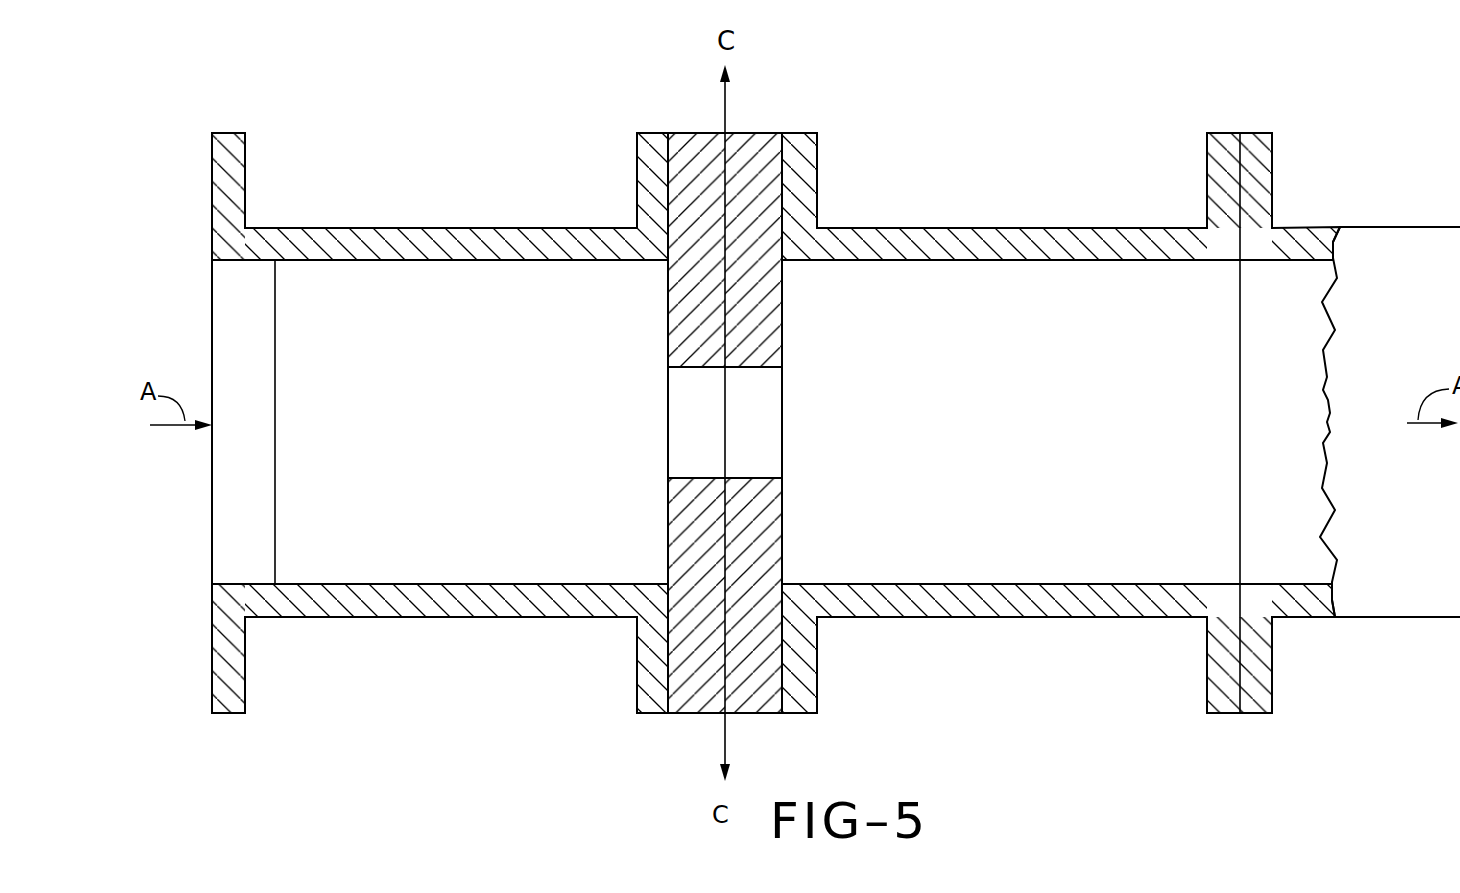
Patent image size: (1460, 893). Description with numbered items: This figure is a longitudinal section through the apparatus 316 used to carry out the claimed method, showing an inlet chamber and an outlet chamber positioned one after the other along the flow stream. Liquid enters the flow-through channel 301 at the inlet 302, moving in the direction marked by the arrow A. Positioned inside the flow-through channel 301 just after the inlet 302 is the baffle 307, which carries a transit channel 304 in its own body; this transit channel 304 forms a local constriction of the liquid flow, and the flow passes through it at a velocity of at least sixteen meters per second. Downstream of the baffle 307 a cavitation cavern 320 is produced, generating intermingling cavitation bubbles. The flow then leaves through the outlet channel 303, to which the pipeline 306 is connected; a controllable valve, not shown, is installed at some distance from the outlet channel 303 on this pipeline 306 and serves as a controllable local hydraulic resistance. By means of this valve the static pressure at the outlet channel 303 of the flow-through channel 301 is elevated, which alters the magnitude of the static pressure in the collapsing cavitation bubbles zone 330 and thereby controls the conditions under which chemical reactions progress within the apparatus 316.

The flow-through channel 301 is at (475, 246).
The inlet 302 is at (240, 323).
The outlet channel 303 is at (1240, 370).
The transit channel 304 is at (767, 394).
The pipeline 306 is at (1283, 234).
The baffle 307 is at (748, 697).
The apparatus 316 is at (406, 673).
The cavitation cavern 320 is at (938, 548).
The collapsing cavitation bubbles zone 330 is at (1265, 557).